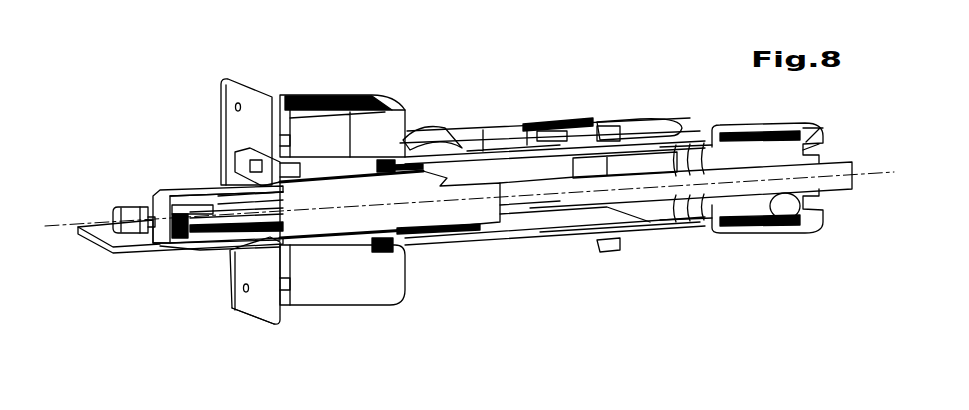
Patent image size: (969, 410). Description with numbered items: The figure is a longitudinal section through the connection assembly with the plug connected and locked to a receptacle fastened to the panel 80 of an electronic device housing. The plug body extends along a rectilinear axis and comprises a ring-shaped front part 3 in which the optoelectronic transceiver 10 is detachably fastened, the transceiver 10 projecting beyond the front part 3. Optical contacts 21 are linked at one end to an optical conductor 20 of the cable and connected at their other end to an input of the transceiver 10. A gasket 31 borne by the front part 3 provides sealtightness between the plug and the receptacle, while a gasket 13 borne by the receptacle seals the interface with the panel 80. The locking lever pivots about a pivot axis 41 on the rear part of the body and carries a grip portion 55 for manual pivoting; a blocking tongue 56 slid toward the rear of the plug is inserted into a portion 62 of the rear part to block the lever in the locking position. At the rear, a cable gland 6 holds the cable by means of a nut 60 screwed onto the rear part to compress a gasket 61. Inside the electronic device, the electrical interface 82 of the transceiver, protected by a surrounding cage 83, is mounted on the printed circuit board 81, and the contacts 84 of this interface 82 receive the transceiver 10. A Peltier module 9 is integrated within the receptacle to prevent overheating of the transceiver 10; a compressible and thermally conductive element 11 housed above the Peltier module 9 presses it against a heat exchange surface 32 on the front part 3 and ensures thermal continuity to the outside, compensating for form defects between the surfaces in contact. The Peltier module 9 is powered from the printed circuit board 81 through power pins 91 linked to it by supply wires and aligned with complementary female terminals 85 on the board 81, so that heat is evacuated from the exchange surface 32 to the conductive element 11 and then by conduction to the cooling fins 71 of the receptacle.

The front part 3 is at (407, 173).
The cable gland 6 is at (852, 307).
The Peltier module 9 is at (335, 167).
The optoelectronic transceiver 10 is at (342, 222).
The compressible thermally conductive element 11 is at (355, 157).
The gasket 13 is at (290, 284).
The optical conductor 20 is at (650, 183).
The optical contacts 21 is at (535, 207).
The gasket 31 is at (385, 254).
The heat exchange surface 32 is at (236, 173).
The pivot axis 41 is at (736, 210).
The grip portion 55 is at (633, 117).
The blocking tongue 56 is at (592, 115).
The nut 60 is at (812, 225).
The gasket 61 is at (776, 233).
The portion of the rear part 62 is at (620, 242).
The cooling fins 71 is at (393, 117).
The panel 80 is at (226, 90).
The printed circuit board 81 is at (115, 245).
The electrical interface 82 is at (181, 250).
The cage 83 is at (172, 200).
The contacts 84 is at (228, 281).
The female terminals 85 is at (111, 214).
The power pins 91 is at (152, 205).